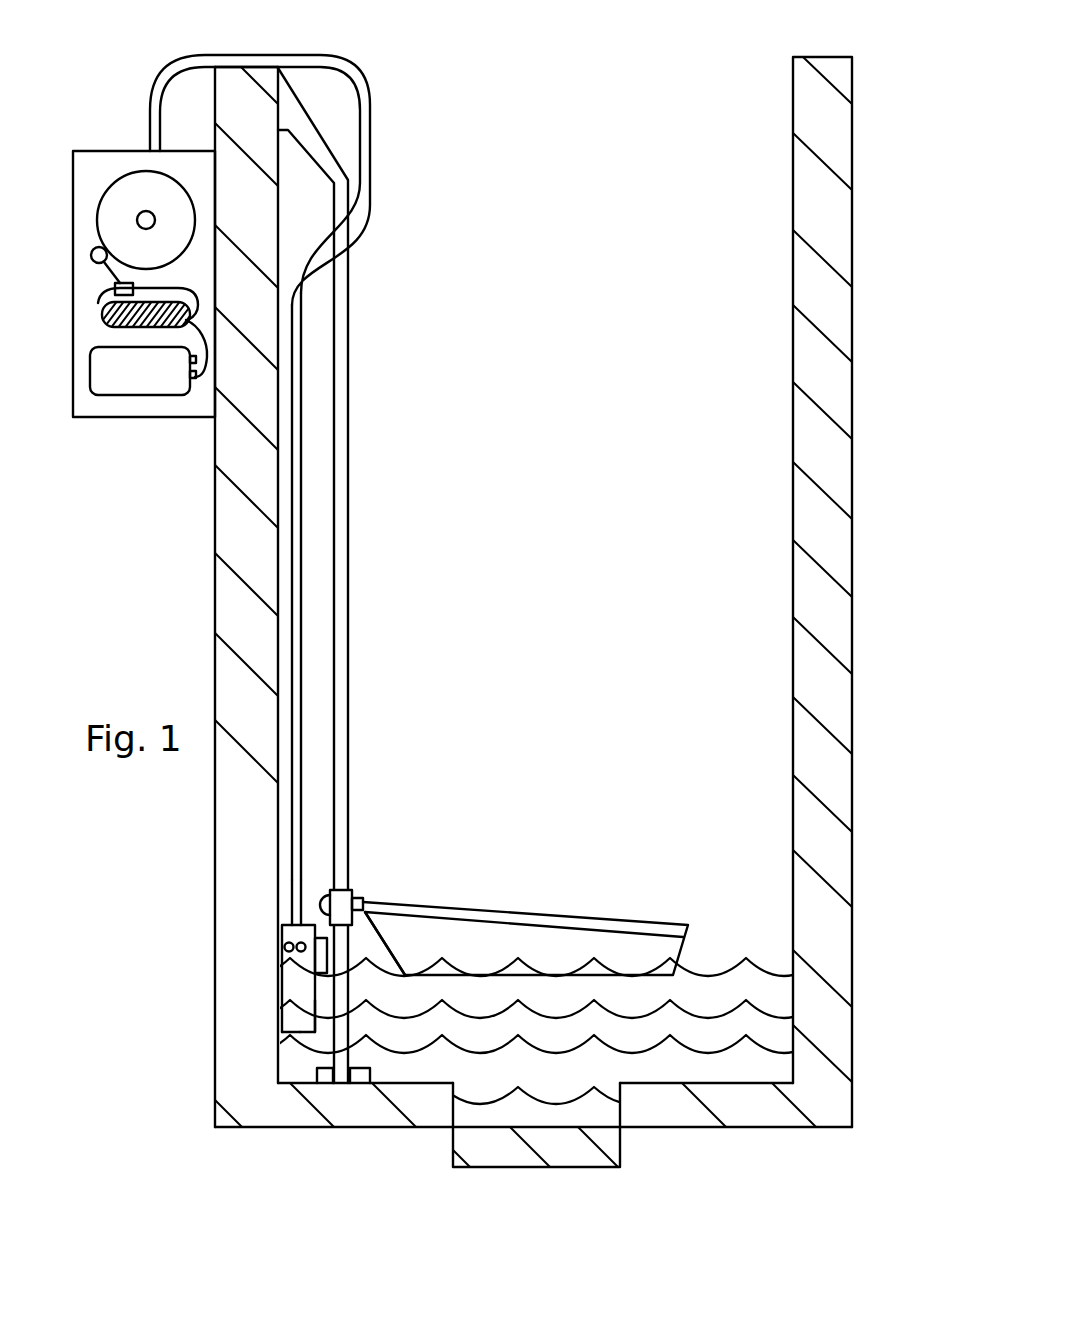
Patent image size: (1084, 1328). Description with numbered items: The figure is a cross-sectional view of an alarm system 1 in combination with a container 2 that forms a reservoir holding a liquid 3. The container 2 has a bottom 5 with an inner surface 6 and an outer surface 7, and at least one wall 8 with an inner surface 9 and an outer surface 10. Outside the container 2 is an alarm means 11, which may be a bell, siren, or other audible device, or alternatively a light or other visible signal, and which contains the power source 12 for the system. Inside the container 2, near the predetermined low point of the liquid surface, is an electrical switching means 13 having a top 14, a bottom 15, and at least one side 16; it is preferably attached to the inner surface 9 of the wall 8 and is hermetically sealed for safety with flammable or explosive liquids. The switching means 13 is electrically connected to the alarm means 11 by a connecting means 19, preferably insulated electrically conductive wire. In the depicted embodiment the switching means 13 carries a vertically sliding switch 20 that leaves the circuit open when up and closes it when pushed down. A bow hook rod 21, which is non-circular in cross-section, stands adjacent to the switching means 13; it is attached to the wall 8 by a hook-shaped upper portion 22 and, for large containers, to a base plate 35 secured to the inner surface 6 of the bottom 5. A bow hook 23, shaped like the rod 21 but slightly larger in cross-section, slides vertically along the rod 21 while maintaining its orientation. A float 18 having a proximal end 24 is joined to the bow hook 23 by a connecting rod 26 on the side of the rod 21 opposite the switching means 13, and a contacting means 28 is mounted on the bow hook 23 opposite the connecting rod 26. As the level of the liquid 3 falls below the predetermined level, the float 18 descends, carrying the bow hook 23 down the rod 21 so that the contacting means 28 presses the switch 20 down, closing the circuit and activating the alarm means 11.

The alarm system 1 is at (466, 112).
The container 2 is at (698, 108).
The liquid 3 is at (755, 1035).
The bottom 5 is at (373, 1107).
The inner surface of bottom 6 is at (695, 1083).
The outer surface of bottom 7 is at (430, 1130).
The wall 8 is at (245, 651).
The inner surface of wall 9 is at (278, 588).
The outer surface of wall 10 is at (215, 547).
The alarm means 11 is at (144, 328).
The power source 12 is at (122, 390).
The electrical switching means 13 is at (292, 987).
The top 14 is at (287, 923).
The bottom 15 is at (297, 1040).
The side 16 is at (310, 1003).
The float 18 is at (660, 945).
The connecting means 19 is at (292, 790).
The vertically sliding switch 20 is at (320, 962).
The bow hook rod 21 is at (348, 717).
The hook-shaped upper portion 22 is at (293, 113).
The bow hook 23 is at (350, 892).
The proximal end 24 is at (393, 957).
The connecting rod 26 is at (367, 902).
The contacting means 28 is at (318, 898).
The base plate 35 is at (323, 1078).